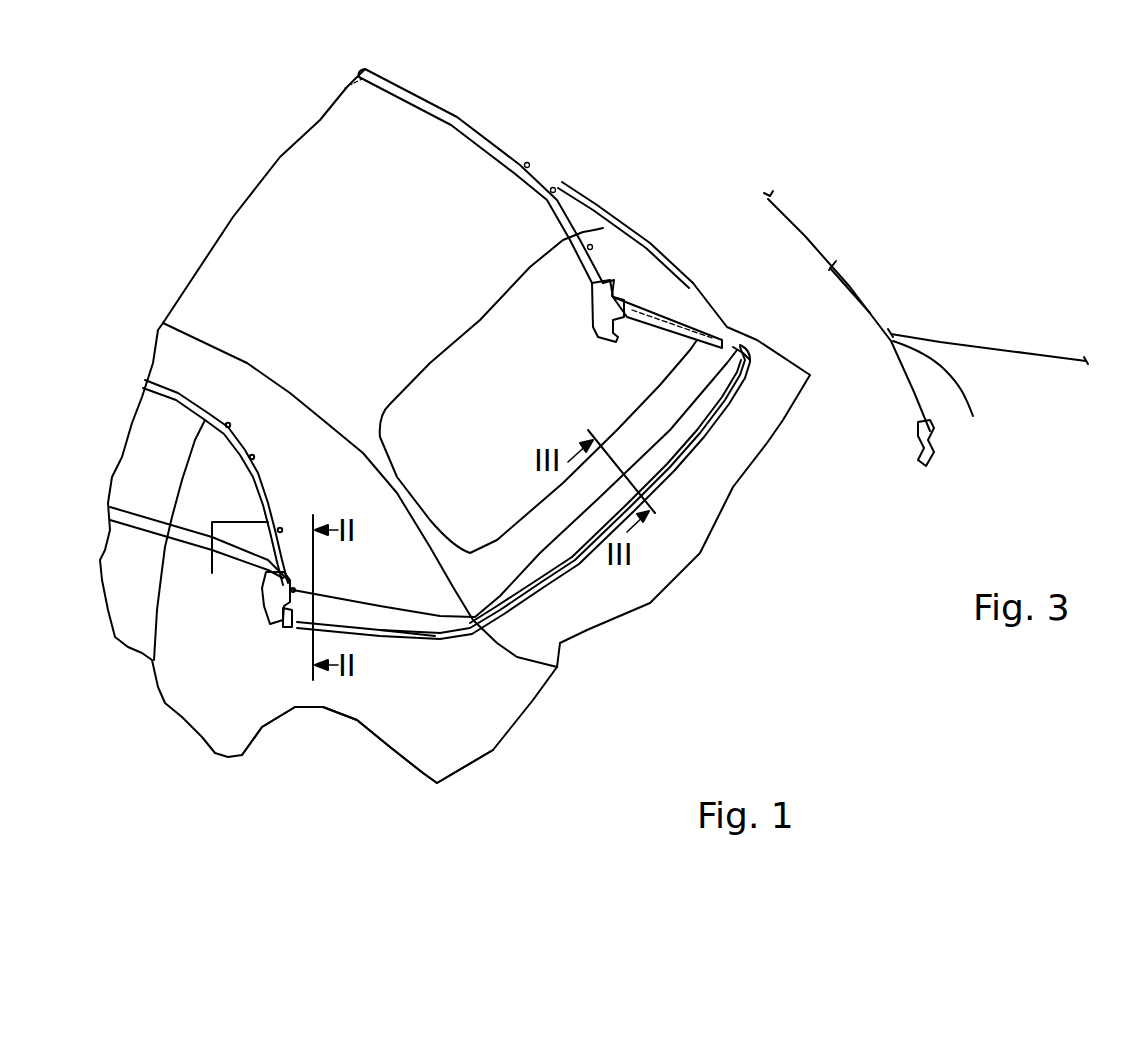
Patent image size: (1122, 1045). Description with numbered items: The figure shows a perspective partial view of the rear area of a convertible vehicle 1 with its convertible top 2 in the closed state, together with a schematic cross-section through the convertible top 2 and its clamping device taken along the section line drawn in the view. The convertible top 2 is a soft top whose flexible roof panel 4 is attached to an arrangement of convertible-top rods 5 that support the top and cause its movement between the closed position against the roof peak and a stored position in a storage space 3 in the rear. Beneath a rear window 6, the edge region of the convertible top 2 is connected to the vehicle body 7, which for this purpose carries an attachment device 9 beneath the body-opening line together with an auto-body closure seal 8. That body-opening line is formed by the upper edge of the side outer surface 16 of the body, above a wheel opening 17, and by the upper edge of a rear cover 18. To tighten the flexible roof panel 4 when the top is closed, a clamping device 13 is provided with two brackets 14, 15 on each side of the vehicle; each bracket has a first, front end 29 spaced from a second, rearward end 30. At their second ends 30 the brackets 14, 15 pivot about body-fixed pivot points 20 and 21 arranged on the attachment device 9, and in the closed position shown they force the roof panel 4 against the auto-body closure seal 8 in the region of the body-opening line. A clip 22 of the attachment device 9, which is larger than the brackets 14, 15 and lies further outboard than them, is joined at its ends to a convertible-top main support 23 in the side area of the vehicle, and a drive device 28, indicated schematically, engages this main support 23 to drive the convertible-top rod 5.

In FIG. 1, the convertible vehicle 1 is at (145, 330).
In FIG. 1, the convertible top 2 is at (303, 190).
In FIG. 1, the storage space 3 is at (615, 681).
In FIG. 3, the storage space 3 is at (904, 321).
In FIG. 1, the flexible roof panel 4 is at (322, 120).
In FIG. 3, the flexible roof panel 4 is at (850, 287).
In FIG. 1, the convertible-top rods 5 is at (468, 137).
In FIG. 1, the rear window 6 is at (575, 255).
In FIG. 3, the rear window 6 is at (805, 236).
In FIG. 1, the vehicle body 7 is at (513, 655).
In FIG. 3, the auto-body closure seal 8 is at (937, 396).
In FIG. 1, the attachment device 9 is at (463, 637).
In FIG. 3, the attachment device 9 is at (932, 445).
In FIG. 1, the clamping device 13 is at (383, 615).
In FIG. 1, the bracket 14 is at (275, 620).
In FIG. 1, the bracket 15 is at (650, 312).
In FIG. 1, the side outer surface 16 is at (305, 685).
In FIG. 1, the wheel opening 17 is at (430, 783).
In FIG. 1, the rear cover 18 is at (715, 467).
In FIG. 3, the rear cover 18 is at (973, 347).
In FIG. 1, the pivot point 20 is at (440, 637).
In FIG. 1, the pivot point 21 is at (733, 348).
In FIG. 1, the clip 22 is at (540, 583).
In FIG. 1, the convertible-top main support 23 is at (265, 593).
In FIG. 1, the drive device 28 is at (230, 566).
In FIG. 1, the first end 29 is at (620, 297).
In FIG. 1, the second end 30 is at (733, 343).